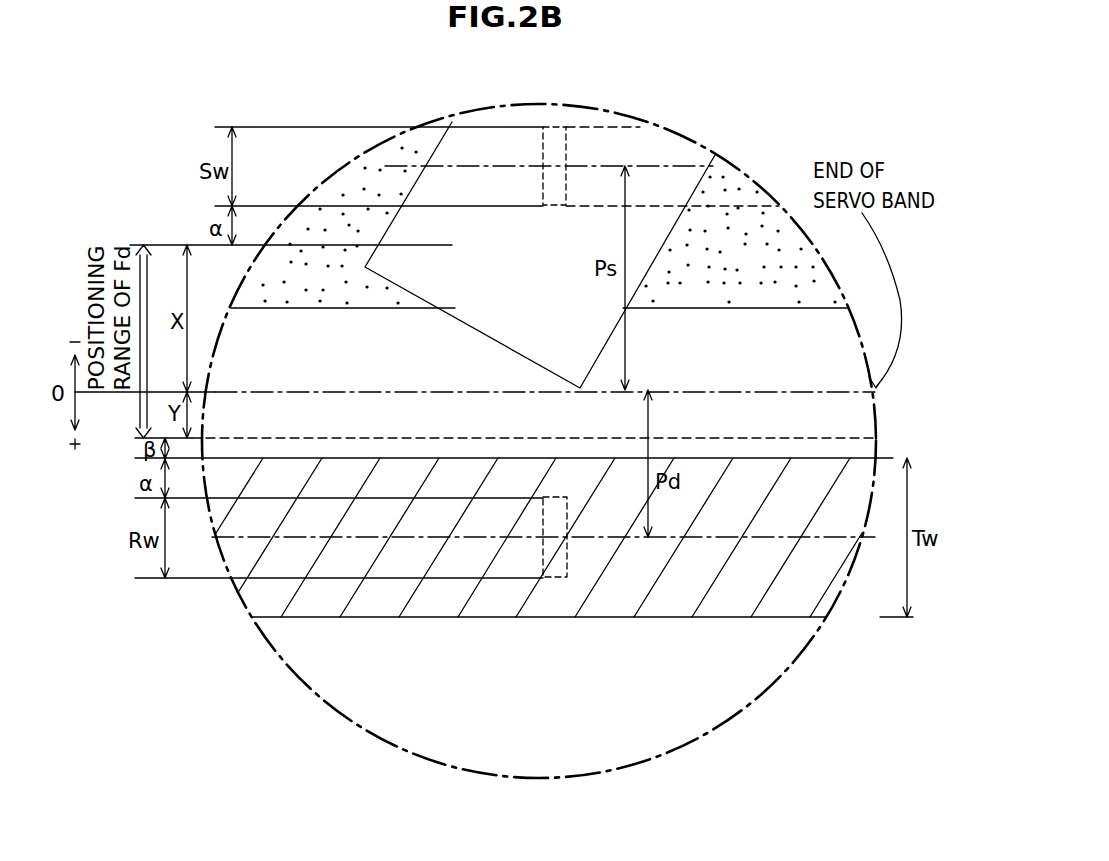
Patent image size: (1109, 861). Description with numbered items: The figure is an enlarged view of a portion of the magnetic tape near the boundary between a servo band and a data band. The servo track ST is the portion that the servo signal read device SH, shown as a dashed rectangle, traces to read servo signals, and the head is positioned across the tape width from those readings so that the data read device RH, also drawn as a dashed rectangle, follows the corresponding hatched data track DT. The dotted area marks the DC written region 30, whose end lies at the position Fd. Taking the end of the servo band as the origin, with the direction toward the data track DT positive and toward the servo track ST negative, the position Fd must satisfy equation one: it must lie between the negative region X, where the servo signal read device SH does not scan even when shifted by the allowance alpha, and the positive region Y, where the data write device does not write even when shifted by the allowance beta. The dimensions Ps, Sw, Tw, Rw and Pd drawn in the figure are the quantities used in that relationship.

The DC written region 30 is at (724, 200).
The servo track ST is at (721, 200).
The servo signal read device SH is at (557, 122).
The data read device RH is at (567, 537).
The data track DT is at (398, 600).
The position of end of DC written region Fd is at (852, 294).